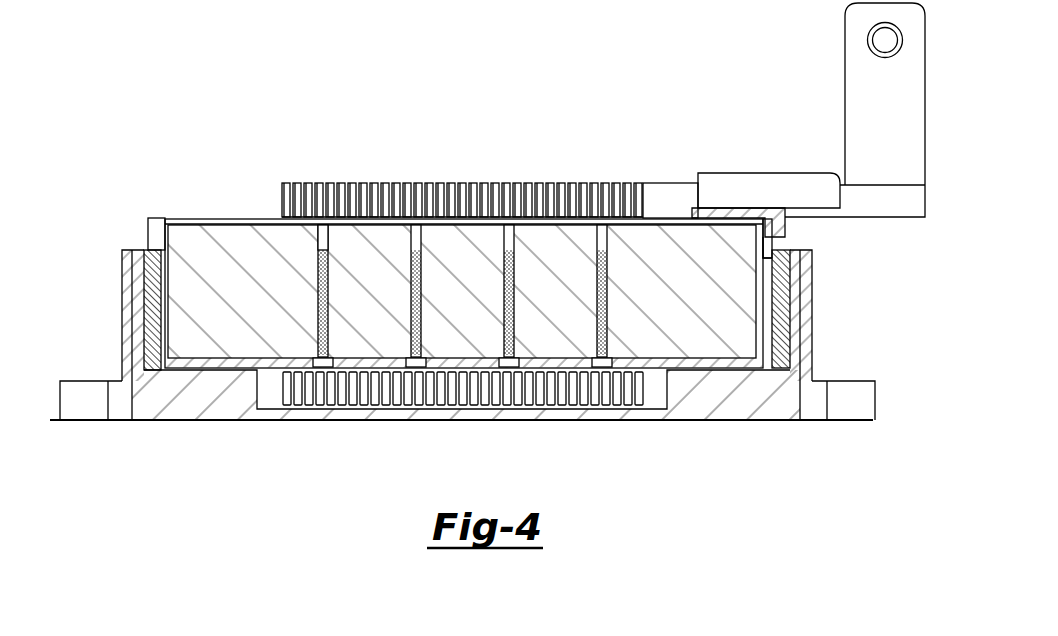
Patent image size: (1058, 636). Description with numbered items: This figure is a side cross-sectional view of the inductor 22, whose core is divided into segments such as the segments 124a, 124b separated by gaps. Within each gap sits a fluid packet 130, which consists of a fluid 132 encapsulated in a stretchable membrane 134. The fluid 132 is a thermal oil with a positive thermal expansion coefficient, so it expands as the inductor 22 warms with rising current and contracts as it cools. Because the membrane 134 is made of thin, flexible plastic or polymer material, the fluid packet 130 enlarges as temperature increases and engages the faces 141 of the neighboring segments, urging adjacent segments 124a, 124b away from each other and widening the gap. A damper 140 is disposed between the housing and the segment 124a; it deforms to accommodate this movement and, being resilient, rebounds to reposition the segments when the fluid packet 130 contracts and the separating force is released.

The inductor 22 is at (677, 150).
The segment 124a is at (195, 342).
The segment 124b is at (357, 313).
The fluid packet 130 is at (605, 327).
The fluid 132 is at (320, 260).
The membrane 134 is at (328, 284).
The damper 140 is at (150, 302).
The face 141 is at (513, 238).